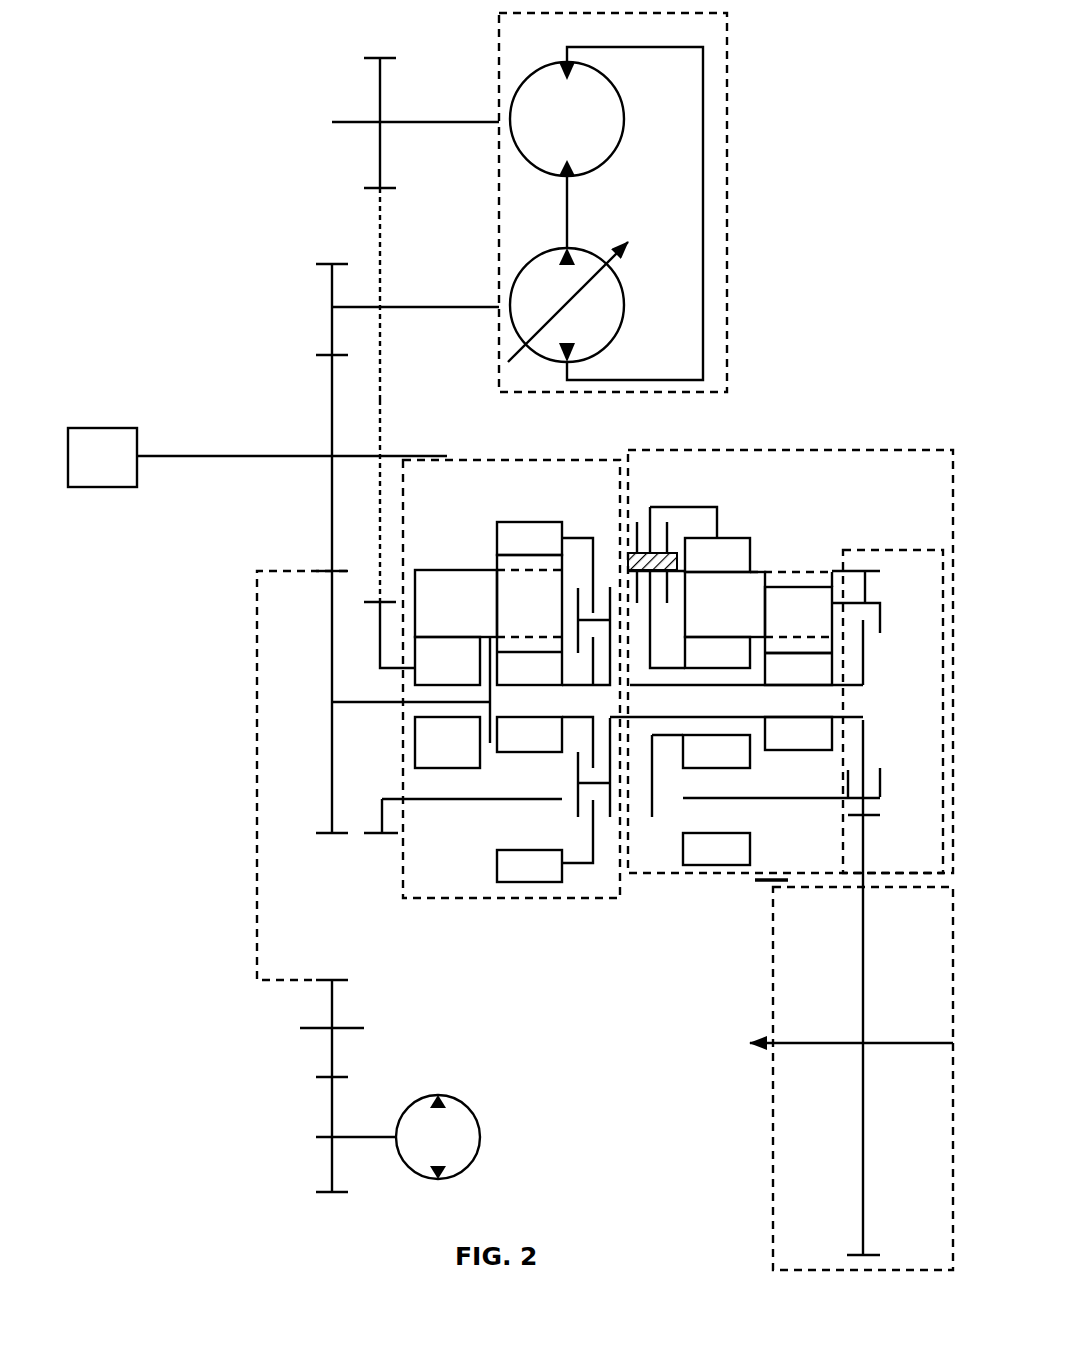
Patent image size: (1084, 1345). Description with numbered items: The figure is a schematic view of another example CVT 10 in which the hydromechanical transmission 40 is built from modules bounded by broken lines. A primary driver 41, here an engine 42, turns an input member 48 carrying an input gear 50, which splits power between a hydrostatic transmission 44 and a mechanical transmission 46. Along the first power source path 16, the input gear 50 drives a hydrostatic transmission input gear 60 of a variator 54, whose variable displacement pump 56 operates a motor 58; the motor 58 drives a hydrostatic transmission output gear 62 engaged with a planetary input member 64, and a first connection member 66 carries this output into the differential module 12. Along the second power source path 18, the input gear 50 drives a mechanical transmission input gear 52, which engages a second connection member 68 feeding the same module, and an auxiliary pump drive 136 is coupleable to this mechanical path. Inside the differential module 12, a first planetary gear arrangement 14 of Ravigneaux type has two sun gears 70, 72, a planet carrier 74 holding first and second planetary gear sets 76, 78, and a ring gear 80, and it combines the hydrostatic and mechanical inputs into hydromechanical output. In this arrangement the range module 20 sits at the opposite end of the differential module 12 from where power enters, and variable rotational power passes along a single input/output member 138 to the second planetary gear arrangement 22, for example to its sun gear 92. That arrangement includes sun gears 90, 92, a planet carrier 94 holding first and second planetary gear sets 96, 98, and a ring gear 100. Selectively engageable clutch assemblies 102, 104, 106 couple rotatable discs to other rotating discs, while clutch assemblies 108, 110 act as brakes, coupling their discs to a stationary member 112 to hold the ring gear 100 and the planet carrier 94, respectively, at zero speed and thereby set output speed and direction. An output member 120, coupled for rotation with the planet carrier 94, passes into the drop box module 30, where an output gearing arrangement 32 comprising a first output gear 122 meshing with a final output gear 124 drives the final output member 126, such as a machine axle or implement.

The CVT 10 is at (107, 42).
The differential module 12 is at (522, 460).
The first planetary gear arrangement 14 is at (536, 503).
The first power source path 16 is at (365, 241).
The second power source path 18 is at (323, 523).
The range module 20 is at (848, 450).
The second planetary gear arrangement 22 is at (736, 530).
The drop box module 30 is at (773, 967).
The output gearing arrangement 32 is at (836, 1071).
The hydromechanical transmission 40 is at (161, 225).
The primary driver 41 is at (85, 495).
The engine 42 is at (102, 457).
The hydrostatic transmission 44 is at (750, 106).
The mechanical transmission 46 is at (513, 928).
The input member 48 is at (170, 455).
The input gear 50 is at (332, 408).
The mechanical transmission input gear 52 is at (330, 657).
The variator 54 is at (499, 80).
The variable displacement pump 56 is at (622, 325).
The motor 58 is at (620, 150).
The hydrostatic transmission input gear 60 is at (332, 325).
The hydrostatic transmission output gear 62 is at (378, 90).
The planetary input member 64 is at (383, 397).
The first connection member 66 is at (395, 668).
The second connection member 68 is at (345, 705).
The sun gear 70 is at (447, 702).
The sun gear 72 is at (529, 702).
The planet carrier 74 is at (456, 603).
The first planetary gear set 76 is at (437, 570).
The second planetary gear set 78 is at (500, 565).
The ring gear 80 is at (529, 539).
The sun gear 90 is at (716, 702).
The sun gear 92 is at (798, 701).
The planet carrier 94 is at (725, 604).
The first planetary gear set 96 is at (757, 572).
The second planetary gear set 98 is at (800, 583).
The ring gear 100 is at (716, 701).
The clutch assembly 102 is at (598, 615).
The clutch assembly 104 is at (600, 637).
The clutch assembly 106 is at (868, 627).
The clutch assembly 108 is at (638, 583).
The clutch assembly 110 is at (635, 553).
The stationary member 112 is at (662, 555).
The output member 120 is at (838, 603).
The first output gear 122 is at (865, 592).
The final output gear 124 is at (863, 995).
The final output member 126 is at (803, 1043).
The auxiliary pump drive 136 is at (480, 1152).
The input/output member 138 is at (858, 688).